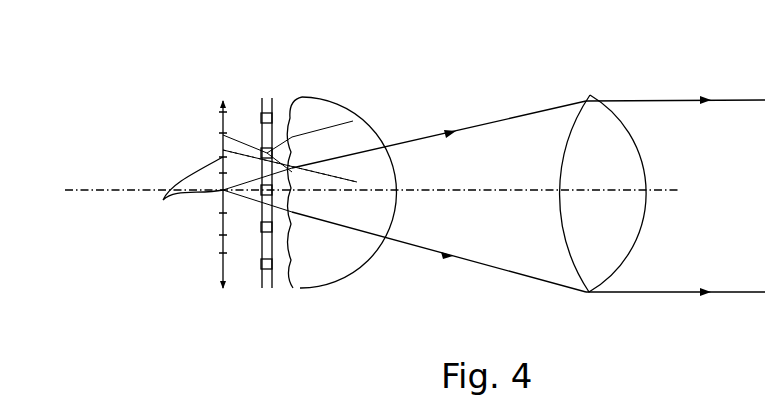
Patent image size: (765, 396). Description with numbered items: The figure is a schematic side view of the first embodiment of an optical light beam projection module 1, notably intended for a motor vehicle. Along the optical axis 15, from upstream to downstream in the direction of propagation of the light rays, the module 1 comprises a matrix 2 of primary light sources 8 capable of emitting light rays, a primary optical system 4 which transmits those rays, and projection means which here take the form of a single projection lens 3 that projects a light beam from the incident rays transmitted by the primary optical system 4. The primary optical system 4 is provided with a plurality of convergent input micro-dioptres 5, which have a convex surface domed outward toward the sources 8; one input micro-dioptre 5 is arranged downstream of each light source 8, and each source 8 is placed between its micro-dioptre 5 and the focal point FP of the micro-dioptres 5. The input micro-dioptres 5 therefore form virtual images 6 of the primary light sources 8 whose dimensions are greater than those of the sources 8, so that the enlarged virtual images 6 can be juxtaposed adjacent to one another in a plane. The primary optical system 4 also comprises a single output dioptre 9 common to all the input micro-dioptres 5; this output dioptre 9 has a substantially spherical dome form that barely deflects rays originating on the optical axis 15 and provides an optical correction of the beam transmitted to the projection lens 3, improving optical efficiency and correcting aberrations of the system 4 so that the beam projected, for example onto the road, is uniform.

The optical light beam projection module 1 is at (153, 81).
The matrix of primary light sources 2 is at (268, 97).
The projection lens 3 is at (594, 128).
The primary optical system 4 is at (339, 190).
The input micro-dioptres 5 is at (283, 243).
The virtual images 6 is at (222, 139).
The primary light sources 8 is at (260, 265).
The output dioptre 9 is at (374, 246).
The optical axis 15 is at (664, 192).